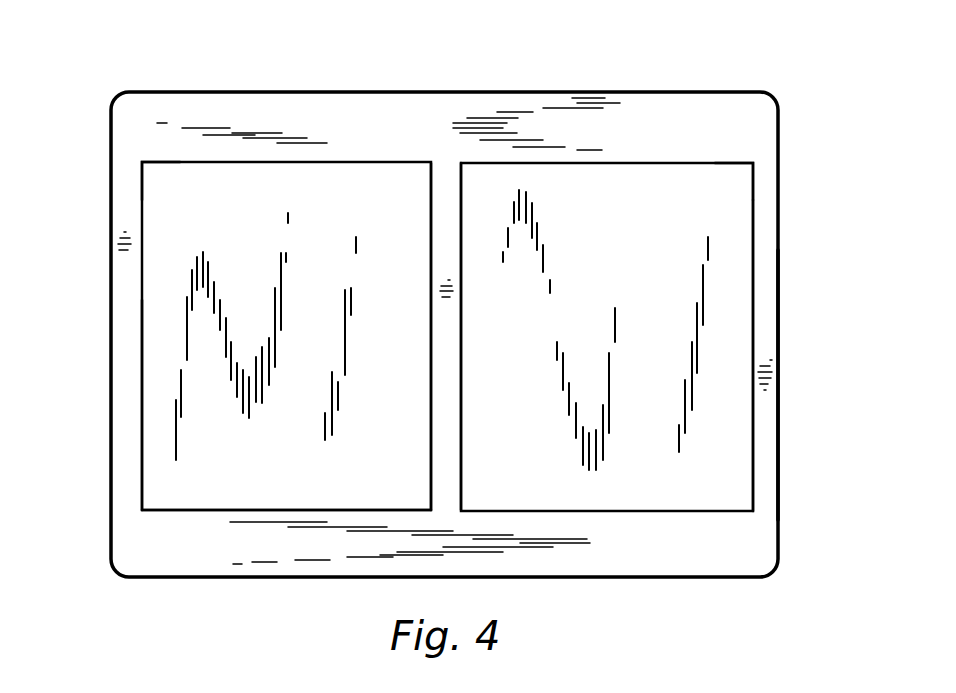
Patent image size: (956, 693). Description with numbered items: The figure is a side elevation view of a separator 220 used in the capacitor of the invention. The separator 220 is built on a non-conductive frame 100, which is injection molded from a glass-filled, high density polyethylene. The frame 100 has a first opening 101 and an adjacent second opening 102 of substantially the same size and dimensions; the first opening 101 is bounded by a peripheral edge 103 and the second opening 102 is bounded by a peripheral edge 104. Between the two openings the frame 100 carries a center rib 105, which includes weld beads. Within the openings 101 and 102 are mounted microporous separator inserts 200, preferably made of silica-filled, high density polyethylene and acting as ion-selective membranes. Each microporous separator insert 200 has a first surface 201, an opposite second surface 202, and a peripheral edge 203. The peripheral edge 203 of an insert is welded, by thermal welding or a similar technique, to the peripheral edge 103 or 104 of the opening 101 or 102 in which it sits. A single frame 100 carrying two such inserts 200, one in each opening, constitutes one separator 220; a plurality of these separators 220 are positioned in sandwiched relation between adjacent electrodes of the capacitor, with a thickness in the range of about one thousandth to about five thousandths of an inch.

The frame 100 is at (538, 108).
The first opening 101 is at (142, 386).
The second opening 102 is at (753, 240).
The peripheral edge 103 is at (653, 165).
The peripheral edge 104 is at (247, 162).
The center rib 105 is at (447, 337).
The microporous separator insert 200 is at (160, 190).
The first surface 201 is at (160, 293).
The second surface 202 is at (150, 470).
The peripheral edge 203 is at (380, 162).
The separator 220 is at (783, 373).